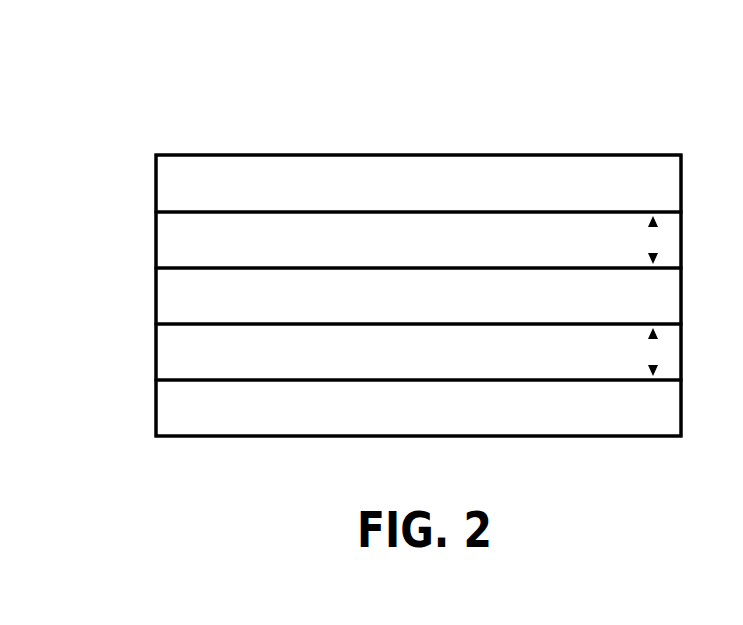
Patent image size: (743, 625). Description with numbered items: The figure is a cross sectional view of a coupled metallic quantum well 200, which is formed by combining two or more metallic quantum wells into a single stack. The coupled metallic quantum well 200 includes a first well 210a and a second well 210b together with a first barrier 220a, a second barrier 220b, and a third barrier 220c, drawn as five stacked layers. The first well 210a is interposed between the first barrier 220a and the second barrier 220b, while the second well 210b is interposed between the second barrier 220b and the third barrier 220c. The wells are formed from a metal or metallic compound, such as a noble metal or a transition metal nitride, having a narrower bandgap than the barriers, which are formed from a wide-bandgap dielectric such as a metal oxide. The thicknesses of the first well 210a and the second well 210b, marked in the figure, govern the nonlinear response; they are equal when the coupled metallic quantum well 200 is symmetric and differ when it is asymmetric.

The coupled metallic quantum well 200 is at (556, 110).
The first barrier 220a is at (476, 194).
The first well 210a is at (465, 250).
The second barrier 220b is at (476, 306).
The second well 210b is at (465, 362).
The third barrier 220c is at (476, 418).